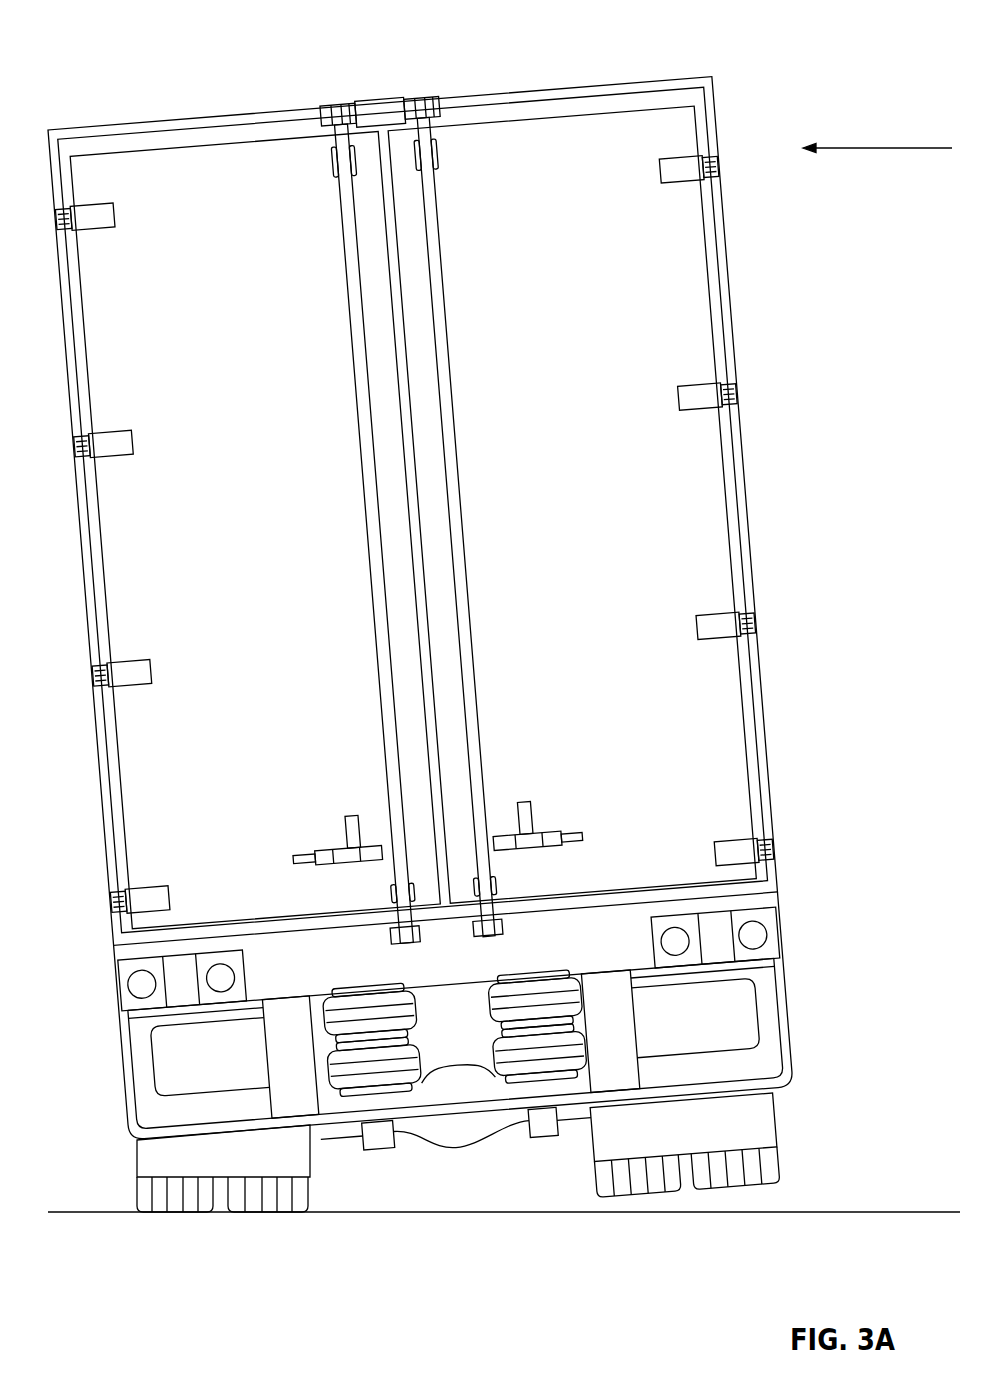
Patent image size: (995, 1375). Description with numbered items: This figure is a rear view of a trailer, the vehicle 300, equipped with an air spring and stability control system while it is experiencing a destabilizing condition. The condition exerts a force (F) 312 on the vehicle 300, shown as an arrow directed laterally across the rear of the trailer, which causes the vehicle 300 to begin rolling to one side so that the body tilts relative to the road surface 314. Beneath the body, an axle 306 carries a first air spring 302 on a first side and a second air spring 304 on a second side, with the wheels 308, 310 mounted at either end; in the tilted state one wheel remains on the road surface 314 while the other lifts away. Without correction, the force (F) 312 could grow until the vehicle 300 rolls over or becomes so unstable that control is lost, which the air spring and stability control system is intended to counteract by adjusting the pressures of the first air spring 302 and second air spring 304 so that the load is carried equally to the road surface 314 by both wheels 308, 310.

The vehicle 300 is at (806, 45).
The first air spring 302 is at (330, 1078).
The second air spring 304 is at (600, 1042).
The axle 306 is at (430, 1122).
The wheel 308 is at (222, 1200).
The wheel 310 is at (692, 1192).
The force (F) 312 is at (891, 150).
The road surface 314 is at (453, 1213).